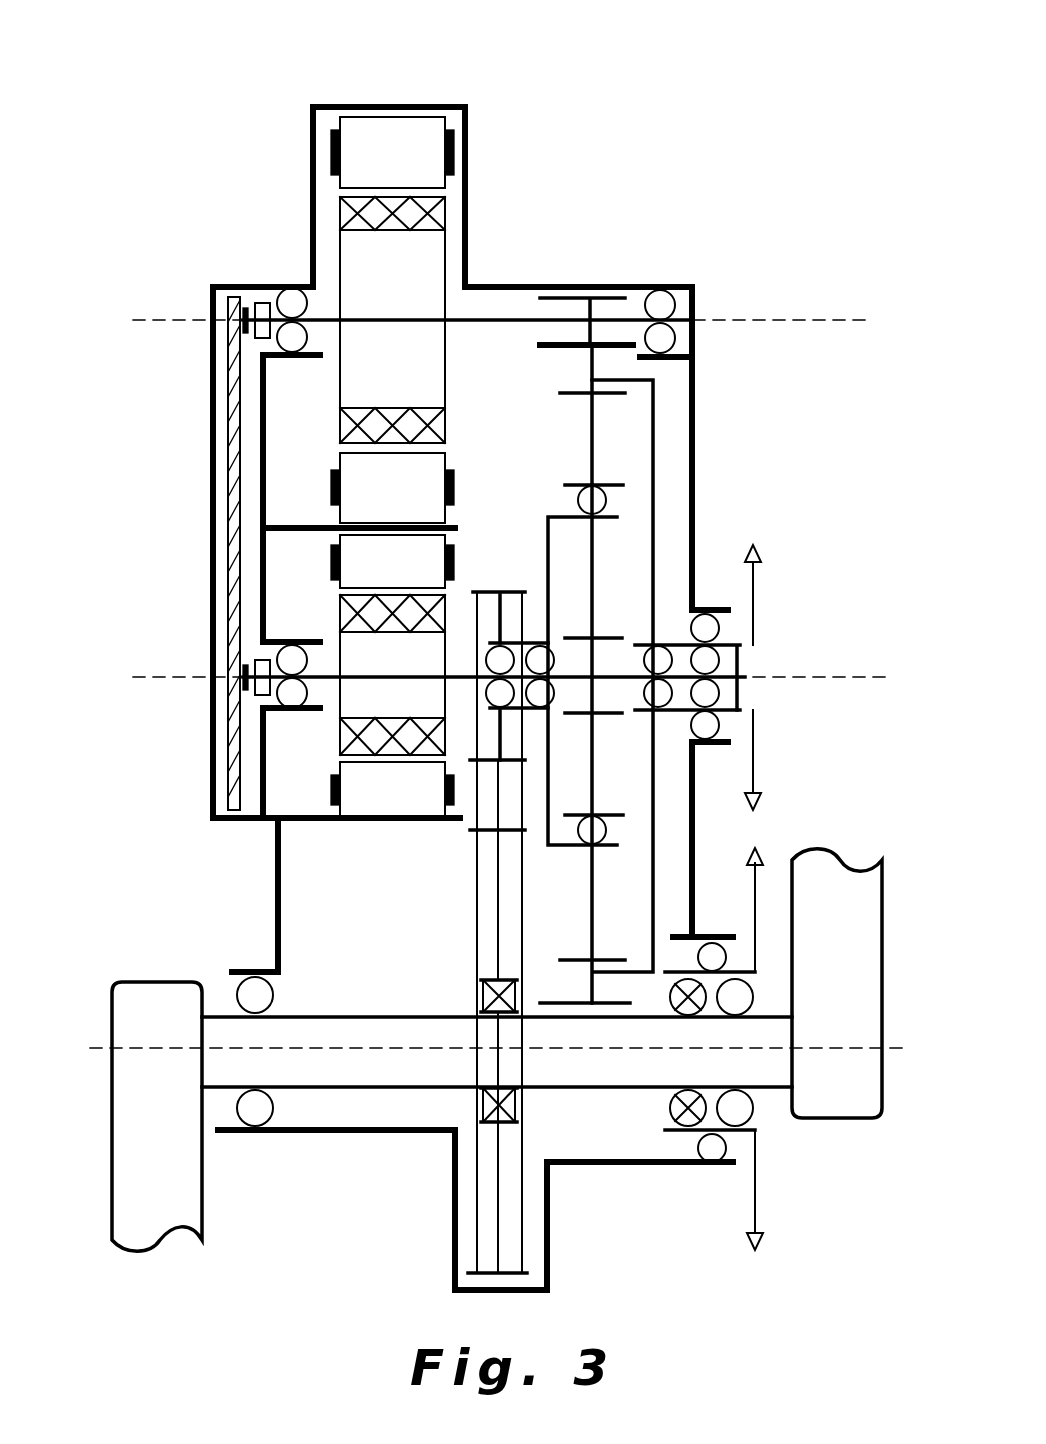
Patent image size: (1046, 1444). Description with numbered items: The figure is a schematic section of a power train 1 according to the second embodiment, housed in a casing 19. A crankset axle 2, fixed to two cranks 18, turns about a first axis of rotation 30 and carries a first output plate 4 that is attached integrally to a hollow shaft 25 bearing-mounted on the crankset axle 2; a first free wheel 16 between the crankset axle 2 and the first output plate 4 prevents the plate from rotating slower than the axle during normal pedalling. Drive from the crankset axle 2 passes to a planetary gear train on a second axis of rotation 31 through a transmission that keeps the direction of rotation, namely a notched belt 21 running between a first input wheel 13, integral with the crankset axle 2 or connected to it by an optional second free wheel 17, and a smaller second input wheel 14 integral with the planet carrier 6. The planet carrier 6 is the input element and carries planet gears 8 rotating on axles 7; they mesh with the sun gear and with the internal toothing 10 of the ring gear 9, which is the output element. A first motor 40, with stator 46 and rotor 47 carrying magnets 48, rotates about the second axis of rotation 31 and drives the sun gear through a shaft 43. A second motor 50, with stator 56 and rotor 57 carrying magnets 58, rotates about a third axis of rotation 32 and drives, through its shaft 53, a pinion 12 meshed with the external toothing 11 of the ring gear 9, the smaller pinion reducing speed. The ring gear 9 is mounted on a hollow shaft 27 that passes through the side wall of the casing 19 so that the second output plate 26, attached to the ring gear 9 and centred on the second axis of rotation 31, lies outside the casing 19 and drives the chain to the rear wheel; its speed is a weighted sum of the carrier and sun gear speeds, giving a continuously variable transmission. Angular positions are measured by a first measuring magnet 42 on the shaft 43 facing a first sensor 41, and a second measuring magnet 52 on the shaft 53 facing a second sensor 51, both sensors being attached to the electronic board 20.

The power train 1 is at (742, 157).
The crankset axle 2 is at (360, 1090).
The first output plate 4 is at (760, 905).
The planet carrier 6 is at (552, 578).
The axles 7 is at (565, 505).
The planet gear 8 is at (600, 430).
The ring gear 9 is at (590, 358).
The internal toothing 10 is at (560, 962).
The external toothing 11 is at (626, 1005).
The pinion 12 is at (635, 290).
The first input wheel 13 is at (487, 1240).
The second input wheel 14 is at (502, 618).
The first free wheel 16 is at (689, 1122).
The second free wheel 17 is at (487, 1130).
The cranks 18 is at (165, 1108).
The casing 19 is at (700, 440).
The electronic board 20 is at (236, 400).
The notched belt 21 is at (474, 862).
The hollow shaft 25 is at (690, 945).
The second output plate 26 is at (757, 752).
The hollow shaft 27 is at (720, 640).
The first axis of rotation 30 is at (886, 1047).
The second axis of rotation 31 is at (859, 672).
The third axis of rotation 32 is at (856, 312).
The first motor 40 is at (363, 780).
The first sensor 41 is at (245, 686).
The first measuring magnet 42 is at (258, 668).
The shaft 43 is at (456, 672).
The stator 46 is at (337, 800).
The rotor 47 is at (374, 690).
The magnets 48 is at (348, 737).
The second motor 50 is at (338, 180).
The second sensor 51 is at (242, 326).
The second measuring magnet 52 is at (262, 315).
The shaft 53 is at (488, 318).
The stator 56 is at (423, 152).
The rotor 57 is at (422, 272).
The magnets 58 is at (458, 185).